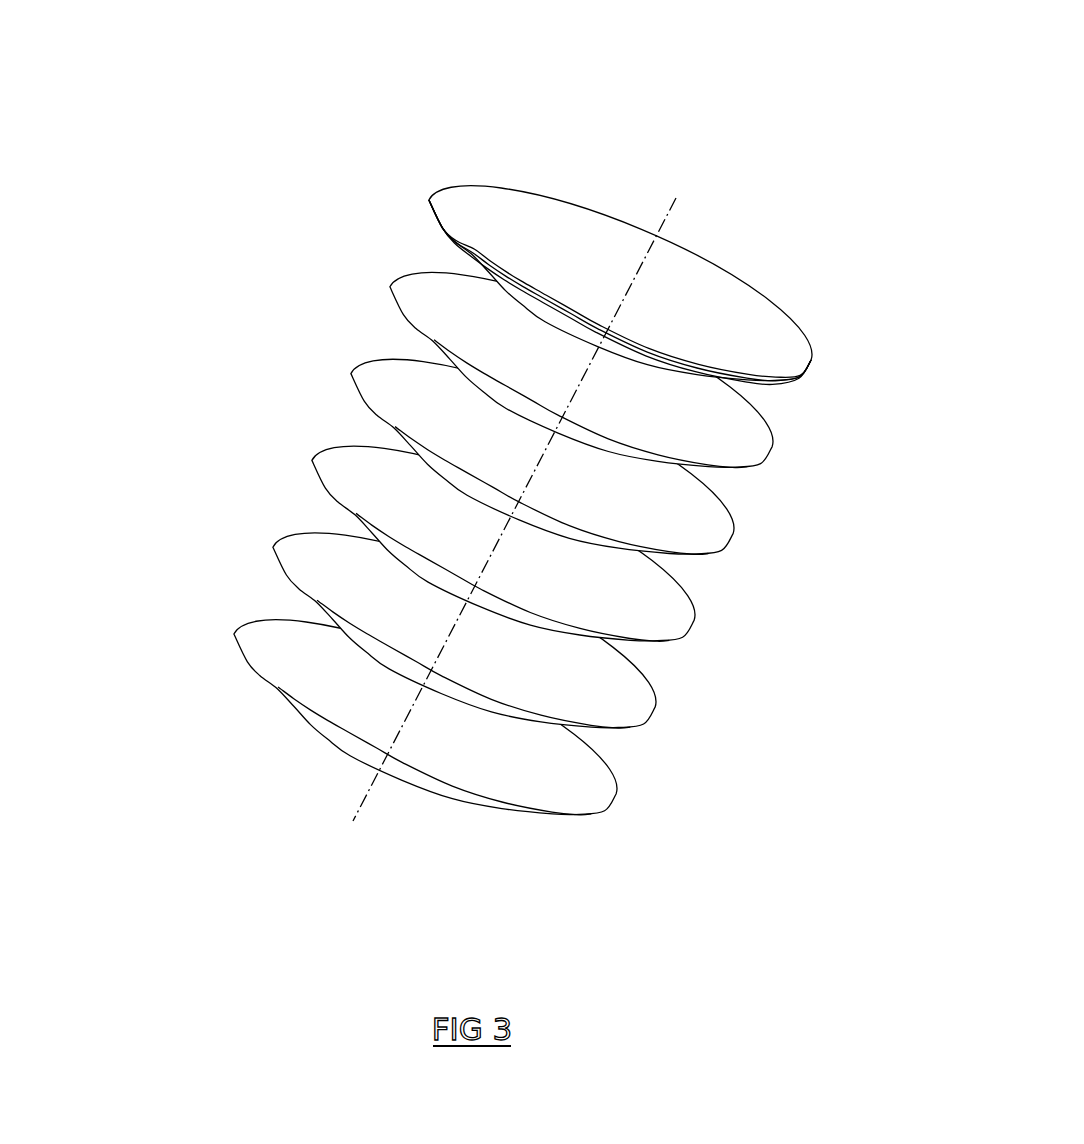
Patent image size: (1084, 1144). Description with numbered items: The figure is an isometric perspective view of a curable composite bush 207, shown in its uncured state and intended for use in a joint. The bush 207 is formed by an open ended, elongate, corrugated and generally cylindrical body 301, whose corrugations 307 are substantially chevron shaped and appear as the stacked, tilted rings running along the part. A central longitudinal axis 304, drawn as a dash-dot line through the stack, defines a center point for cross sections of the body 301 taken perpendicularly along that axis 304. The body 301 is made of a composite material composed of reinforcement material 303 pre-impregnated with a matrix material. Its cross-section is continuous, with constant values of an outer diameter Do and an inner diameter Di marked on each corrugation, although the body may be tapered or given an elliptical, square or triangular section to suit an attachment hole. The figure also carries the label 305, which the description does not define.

The curable composite bush 207 is at (368, 173).
The body 301 is at (510, 237).
The reinforcement material 303 is at (425, 772).
The central longitudinal axis 304 is at (675, 199).
The top disc 305 is at (603, 220).
The corrugations 307 is at (811, 360).
The outer diameter Do is at (704, 263).
The inner diameter Di is at (640, 318).